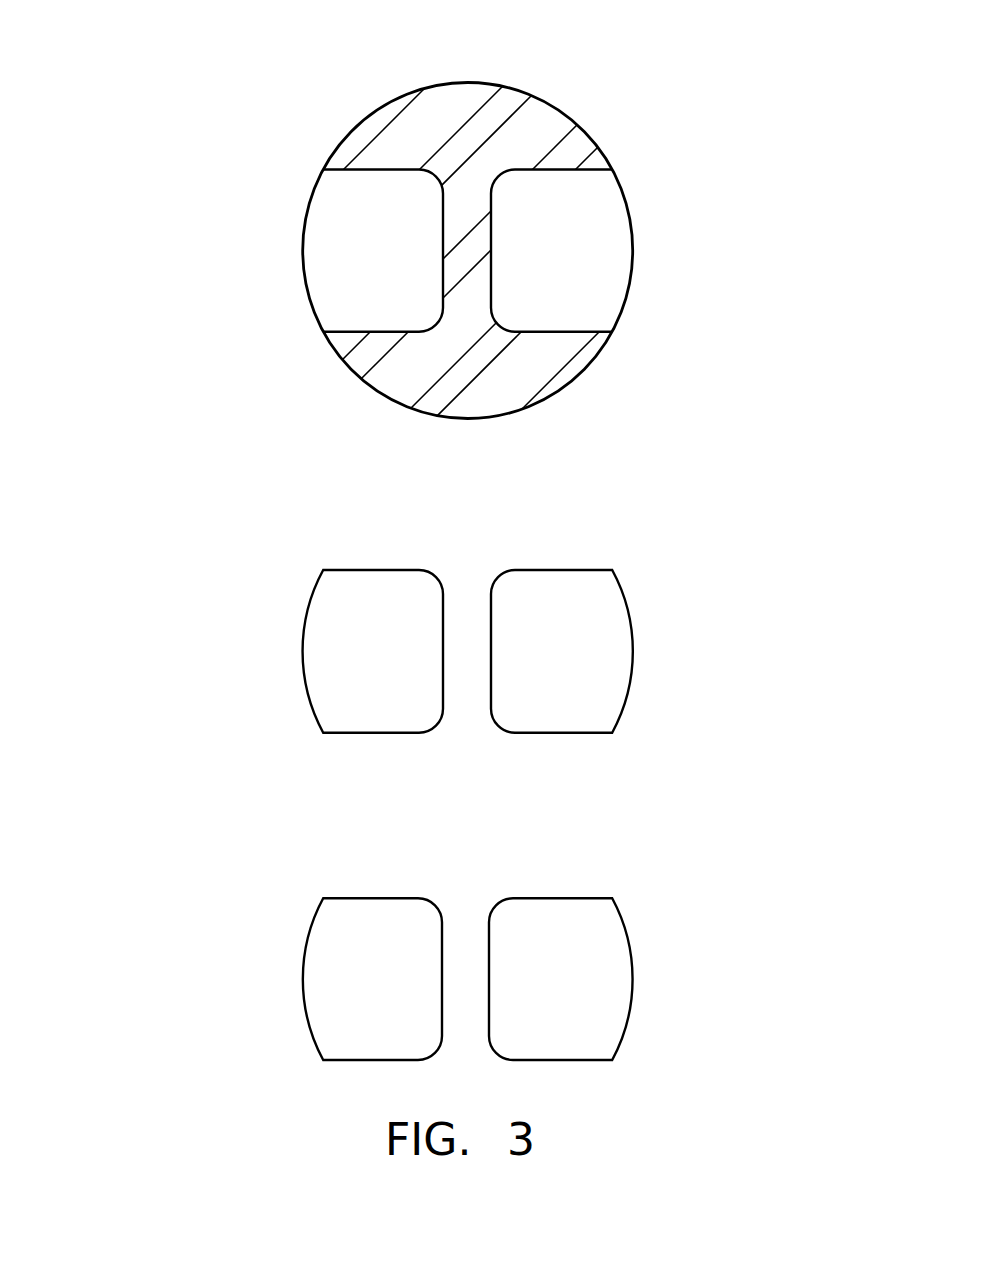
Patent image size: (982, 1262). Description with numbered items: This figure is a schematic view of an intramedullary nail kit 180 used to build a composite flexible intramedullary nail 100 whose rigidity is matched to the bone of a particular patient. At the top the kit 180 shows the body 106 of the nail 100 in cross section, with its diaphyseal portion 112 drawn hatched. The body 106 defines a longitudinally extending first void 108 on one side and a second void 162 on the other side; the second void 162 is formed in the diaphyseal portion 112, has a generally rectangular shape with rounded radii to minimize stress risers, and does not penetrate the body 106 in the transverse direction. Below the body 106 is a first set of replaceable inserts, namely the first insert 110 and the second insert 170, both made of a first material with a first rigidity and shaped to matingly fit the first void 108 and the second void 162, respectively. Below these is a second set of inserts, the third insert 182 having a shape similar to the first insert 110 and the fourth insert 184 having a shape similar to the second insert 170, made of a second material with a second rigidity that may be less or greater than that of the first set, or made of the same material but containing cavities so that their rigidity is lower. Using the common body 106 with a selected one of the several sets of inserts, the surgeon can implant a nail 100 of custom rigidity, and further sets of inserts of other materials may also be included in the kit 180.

The composite flexible intramedullary nail 100 is at (664, 76).
The body 106 is at (470, 83).
The first void 108 is at (663, 252).
The first insert 110 is at (555, 570).
The diaphyseal portion 112 is at (536, 99).
The second void 162 is at (263, 247).
The second insert 170 is at (370, 570).
The kit 180 is at (223, 92).
The third insert 182 is at (618, 920).
The fourth insert 184 is at (307, 932).